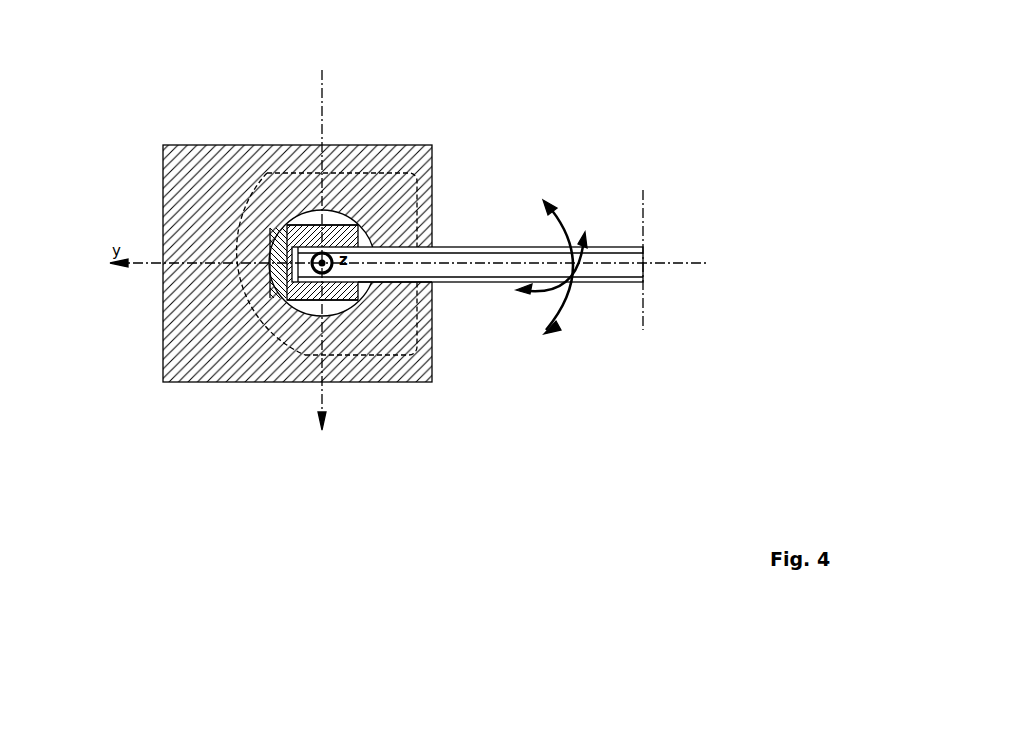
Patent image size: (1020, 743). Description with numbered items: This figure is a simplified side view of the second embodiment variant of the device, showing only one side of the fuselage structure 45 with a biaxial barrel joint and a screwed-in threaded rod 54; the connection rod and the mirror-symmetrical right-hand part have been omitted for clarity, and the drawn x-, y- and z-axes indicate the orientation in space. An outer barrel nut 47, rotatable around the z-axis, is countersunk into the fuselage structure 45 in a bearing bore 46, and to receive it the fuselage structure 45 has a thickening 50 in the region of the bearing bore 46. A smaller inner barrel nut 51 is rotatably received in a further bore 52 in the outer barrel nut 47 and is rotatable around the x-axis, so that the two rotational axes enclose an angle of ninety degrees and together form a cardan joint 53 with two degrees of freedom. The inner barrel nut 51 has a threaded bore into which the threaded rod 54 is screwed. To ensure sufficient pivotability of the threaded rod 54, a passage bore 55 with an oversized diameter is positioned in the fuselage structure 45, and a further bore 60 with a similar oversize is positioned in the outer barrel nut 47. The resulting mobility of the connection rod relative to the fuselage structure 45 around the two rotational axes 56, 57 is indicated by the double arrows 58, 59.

The fuselage structure 45 is at (202, 168).
The bearing bore 46 is at (273, 233).
The outer barrel nut 47 is at (262, 318).
The thickening 50 is at (337, 210).
The inner barrel nut 51 is at (288, 323).
The further bore 52 is at (355, 292).
The joint 53 is at (307, 214).
The threaded rod 54 is at (480, 248).
The passage bore 55 is at (418, 283).
The rotational axis 56 is at (320, 382).
The rotational axis 57 is at (316, 224).
The double arrow 58 is at (557, 222).
The double arrow 59 is at (598, 250).
The further bore 60 is at (370, 286).